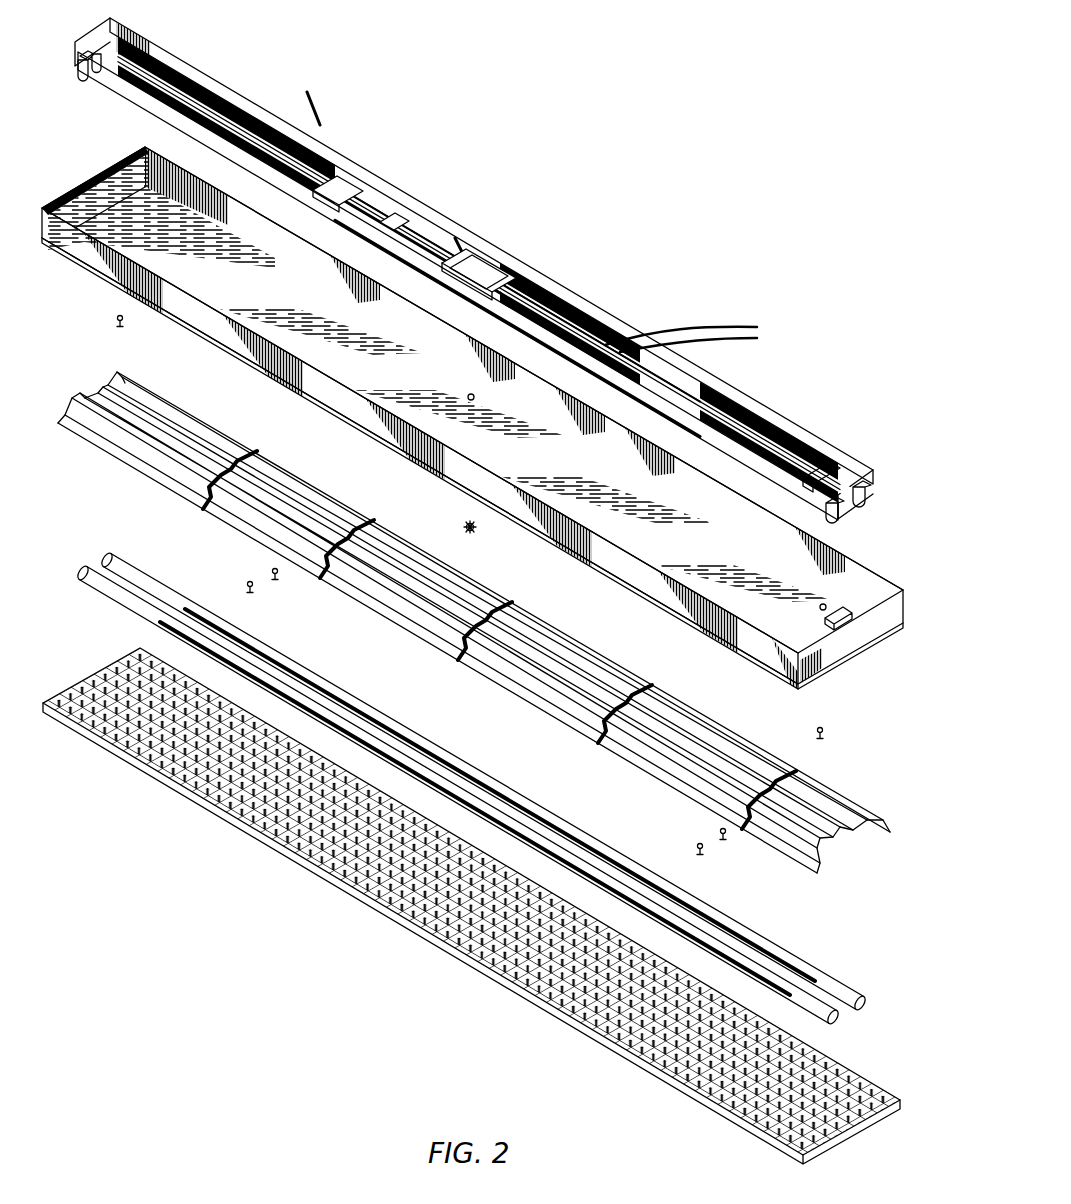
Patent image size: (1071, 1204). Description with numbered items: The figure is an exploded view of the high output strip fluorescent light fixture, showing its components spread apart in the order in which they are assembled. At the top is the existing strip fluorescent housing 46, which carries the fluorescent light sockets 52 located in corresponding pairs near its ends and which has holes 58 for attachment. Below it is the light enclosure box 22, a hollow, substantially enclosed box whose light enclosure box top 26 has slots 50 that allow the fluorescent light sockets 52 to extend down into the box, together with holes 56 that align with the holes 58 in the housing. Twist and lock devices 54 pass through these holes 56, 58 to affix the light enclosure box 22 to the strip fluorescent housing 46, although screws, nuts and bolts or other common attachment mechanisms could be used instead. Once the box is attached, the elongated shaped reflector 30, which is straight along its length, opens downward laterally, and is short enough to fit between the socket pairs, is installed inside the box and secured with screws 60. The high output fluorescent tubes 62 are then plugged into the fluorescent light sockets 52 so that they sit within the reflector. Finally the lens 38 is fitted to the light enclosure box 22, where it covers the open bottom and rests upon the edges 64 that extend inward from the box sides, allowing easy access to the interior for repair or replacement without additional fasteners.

The light enclosure box 22 is at (98, 168).
The light enclosure box top 26 is at (384, 383).
The elongated shaped reflector 30 is at (415, 621).
The lens 38 is at (290, 861).
The strip fluorescent housing 46 is at (440, 215).
The slots 50 is at (835, 632).
The fluorescent light sockets 52 is at (90, 82).
The twist and lock devices 54 is at (474, 537).
The holes 56 is at (469, 402).
The holes 58 is at (463, 286).
The screws 60 is at (276, 580).
The high output fluorescent tubes 62 is at (440, 738).
The edges 64 is at (583, 452).